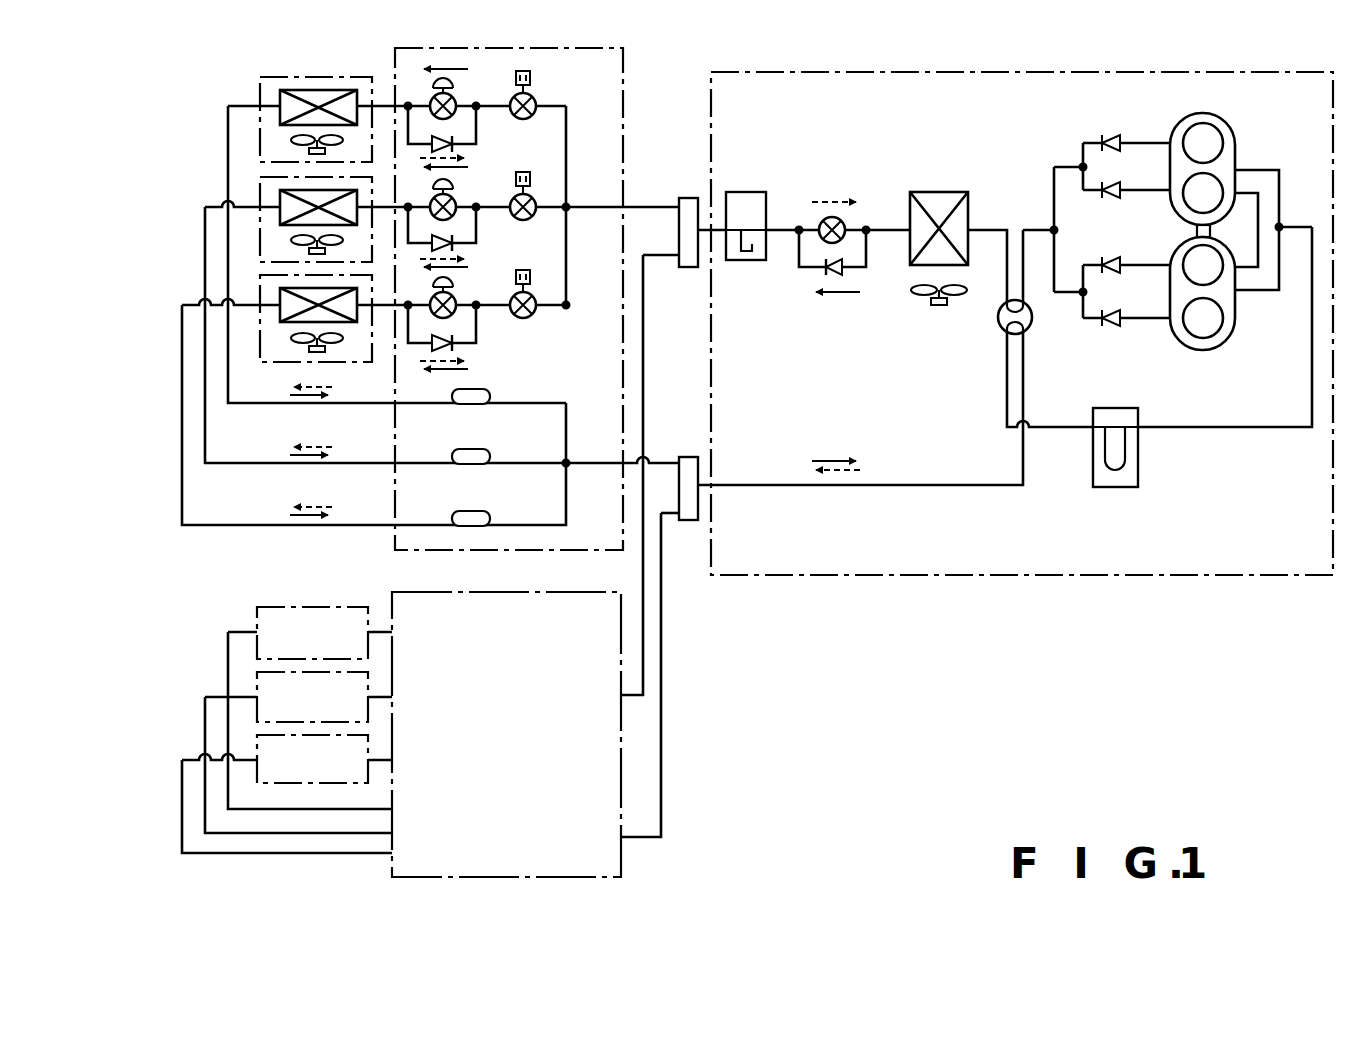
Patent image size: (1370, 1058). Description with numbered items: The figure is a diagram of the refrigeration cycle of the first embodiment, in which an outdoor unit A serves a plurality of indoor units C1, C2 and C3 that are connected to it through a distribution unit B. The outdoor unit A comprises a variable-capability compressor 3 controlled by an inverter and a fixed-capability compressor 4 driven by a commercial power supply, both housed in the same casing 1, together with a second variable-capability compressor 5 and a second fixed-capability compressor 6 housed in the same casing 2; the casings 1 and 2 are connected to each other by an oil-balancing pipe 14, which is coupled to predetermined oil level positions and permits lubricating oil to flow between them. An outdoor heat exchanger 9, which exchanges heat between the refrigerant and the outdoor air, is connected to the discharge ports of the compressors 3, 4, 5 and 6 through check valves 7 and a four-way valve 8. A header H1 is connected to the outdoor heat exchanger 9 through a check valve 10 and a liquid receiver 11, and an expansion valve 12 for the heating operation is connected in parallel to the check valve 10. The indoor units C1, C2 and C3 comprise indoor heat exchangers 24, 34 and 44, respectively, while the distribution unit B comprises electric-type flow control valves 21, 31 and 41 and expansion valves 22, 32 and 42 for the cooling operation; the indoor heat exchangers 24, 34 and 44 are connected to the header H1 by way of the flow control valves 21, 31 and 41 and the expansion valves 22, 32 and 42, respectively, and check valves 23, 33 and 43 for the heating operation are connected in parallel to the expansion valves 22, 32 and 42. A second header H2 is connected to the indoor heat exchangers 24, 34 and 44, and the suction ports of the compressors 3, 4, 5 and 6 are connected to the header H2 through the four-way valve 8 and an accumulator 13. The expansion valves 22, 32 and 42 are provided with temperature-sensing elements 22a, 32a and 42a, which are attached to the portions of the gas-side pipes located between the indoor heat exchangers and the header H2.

The casing 1 is at (1175, 122).
The casing 2 is at (1180, 345).
The variable-capability compressor 3 is at (1212, 125).
The fixed-capability compressor 4 is at (1222, 178).
The variable-capability compressor 5 is at (1215, 252).
The fixed-capability compressor 6 is at (1222, 335).
The check valves 7 is at (1122, 152).
The four-way valve 8 is at (1030, 330).
The outdoor heat exchanger 9 is at (940, 192).
The check valve 10 is at (845, 272).
The liquid receiver 11 is at (745, 192).
The expansion valve 12 is at (823, 221).
The accumulator 13 is at (1138, 468).
The oil-balancing pipe 14 is at (1197, 231).
The flow control valve 21 is at (535, 100).
The expansion valve 22 is at (455, 99).
The check valve 23 is at (455, 142).
The indoor heat exchanger 24 is at (345, 92).
The flow control valve 31 is at (534, 198).
The expansion valve 32 is at (455, 201).
The check valve 33 is at (455, 242).
The indoor heat exchanger 34 is at (280, 205).
The flow control valve 41 is at (534, 296).
The expansion valve 42 is at (455, 298).
The check valve 43 is at (455, 342).
The indoor heat exchanger 44 is at (285, 310).
The temperature-sensing element 22a is at (480, 390).
The temperature-sensing element 32a is at (480, 450).
The temperature-sensing element 42a is at (480, 512).
The outdoor unit A is at (905, 580).
The distribution unit B is at (627, 54).
The indoor unit C1 is at (257, 620).
The indoor unit C2 is at (257, 688).
The indoor unit C3 is at (257, 745).
The header H1 is at (686, 198).
The header H2 is at (688, 457).